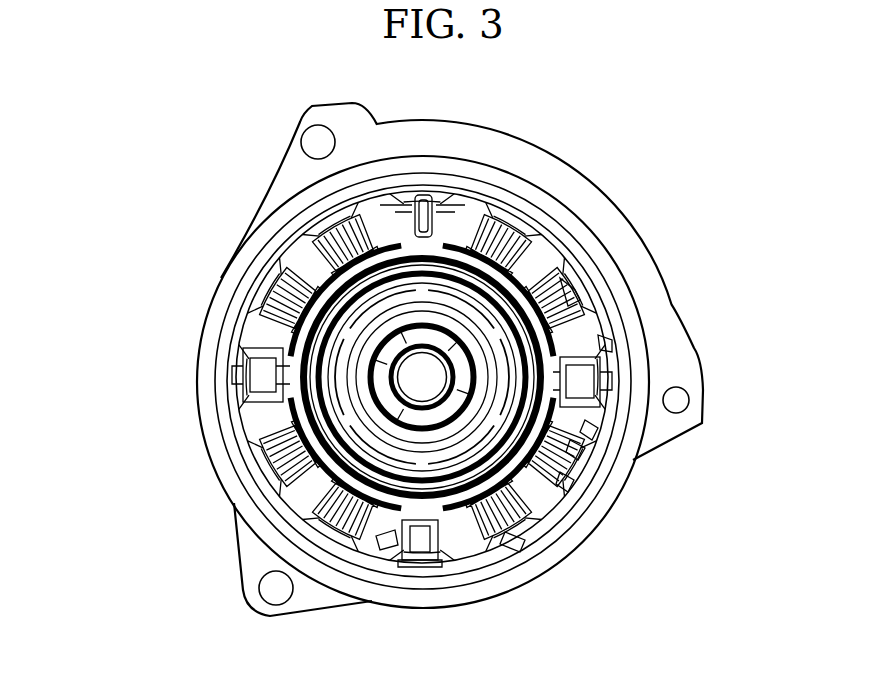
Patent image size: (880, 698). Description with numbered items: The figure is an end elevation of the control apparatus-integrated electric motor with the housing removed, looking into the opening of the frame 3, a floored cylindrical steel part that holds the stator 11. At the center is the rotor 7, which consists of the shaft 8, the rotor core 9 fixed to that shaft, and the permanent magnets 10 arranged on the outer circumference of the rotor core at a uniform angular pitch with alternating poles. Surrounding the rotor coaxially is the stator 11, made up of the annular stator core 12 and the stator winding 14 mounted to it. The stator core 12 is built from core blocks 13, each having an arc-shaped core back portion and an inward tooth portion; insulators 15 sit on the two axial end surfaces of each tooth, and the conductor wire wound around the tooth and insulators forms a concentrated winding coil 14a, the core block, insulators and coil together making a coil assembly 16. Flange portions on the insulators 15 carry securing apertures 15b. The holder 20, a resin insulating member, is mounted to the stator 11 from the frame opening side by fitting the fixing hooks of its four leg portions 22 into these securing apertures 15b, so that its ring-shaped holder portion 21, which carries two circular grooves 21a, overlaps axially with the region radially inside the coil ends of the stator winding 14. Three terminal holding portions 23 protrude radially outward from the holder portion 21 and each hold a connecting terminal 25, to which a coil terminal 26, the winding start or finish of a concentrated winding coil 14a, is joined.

The frame 3 is at (590, 192).
The rotor 7 is at (150, 443).
The shaft 8 is at (283, 392).
The rotor core 9 is at (285, 437).
The permanent magnets 10 is at (270, 480).
The stator 11 is at (512, 82).
The stator core 12 is at (487, 195).
The core blocks 13 is at (273, 275).
The stator winding 14 is at (462, 210).
The concentrated winding coil 14a is at (283, 330).
The insulators 15 is at (260, 312).
The securing apertures 15b is at (517, 540).
The coil assembly 16 is at (130, 237).
The holder 20 is at (590, 430).
The holder portion 21 is at (580, 445).
The circular grooves 21a is at (570, 478).
The leg portions 22 is at (574, 292).
The terminal holding portions 23 is at (605, 345).
The connecting terminal 25 is at (243, 377).
The coil terminal 26 is at (385, 547).